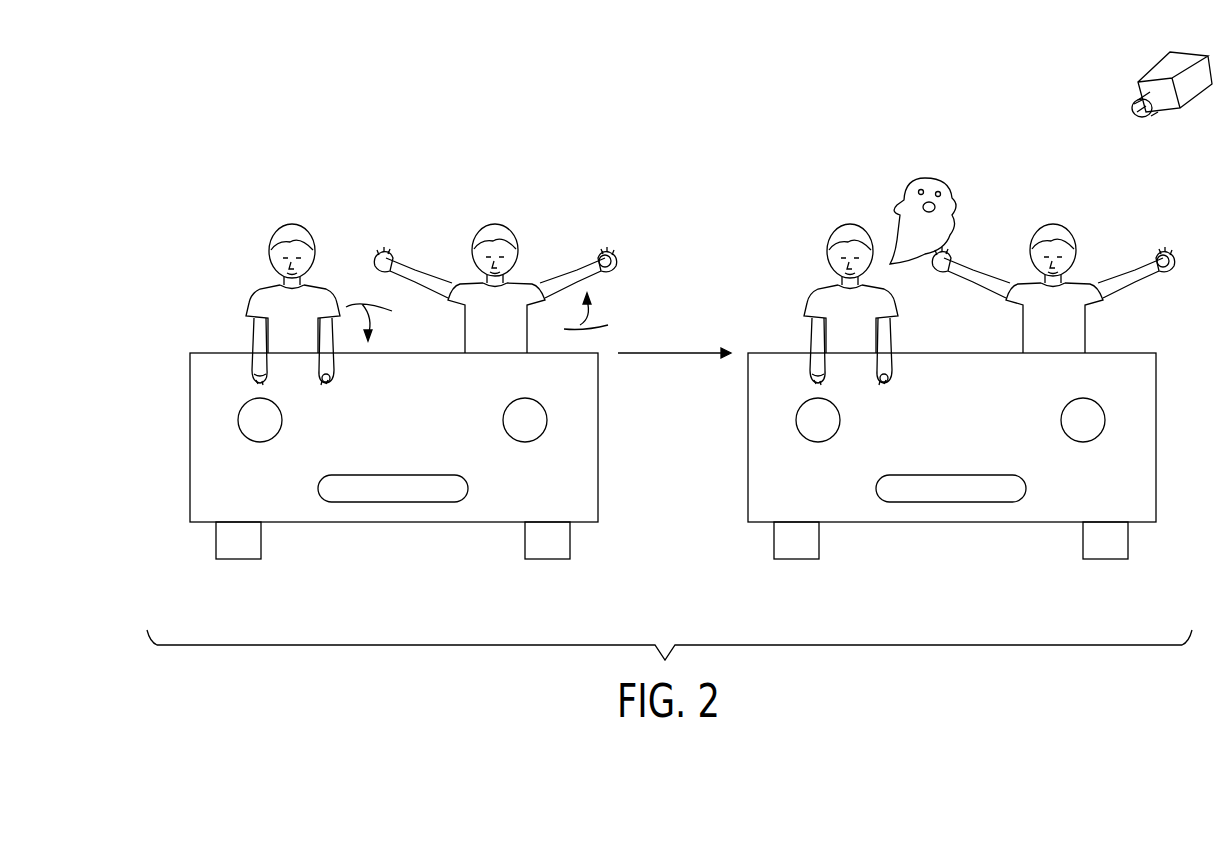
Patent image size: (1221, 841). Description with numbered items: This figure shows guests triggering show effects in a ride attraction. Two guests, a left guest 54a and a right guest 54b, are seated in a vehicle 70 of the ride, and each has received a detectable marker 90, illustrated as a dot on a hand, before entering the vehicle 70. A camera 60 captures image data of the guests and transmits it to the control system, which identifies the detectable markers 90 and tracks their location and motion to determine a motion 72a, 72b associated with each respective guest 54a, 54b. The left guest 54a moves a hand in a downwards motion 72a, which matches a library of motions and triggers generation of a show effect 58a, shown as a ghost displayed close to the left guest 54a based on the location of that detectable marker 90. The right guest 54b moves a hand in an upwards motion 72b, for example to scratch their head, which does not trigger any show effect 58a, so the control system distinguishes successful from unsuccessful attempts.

The left guest 54a is at (283, 234).
The right guest 54b is at (484, 234).
The show effect 58a is at (905, 204).
The camera 60 is at (1190, 98).
The vehicle 70 is at (210, 486).
The downwards motion 72a is at (387, 318).
The upwards motion 72b is at (604, 314).
The detectable marker 90 is at (594, 262).